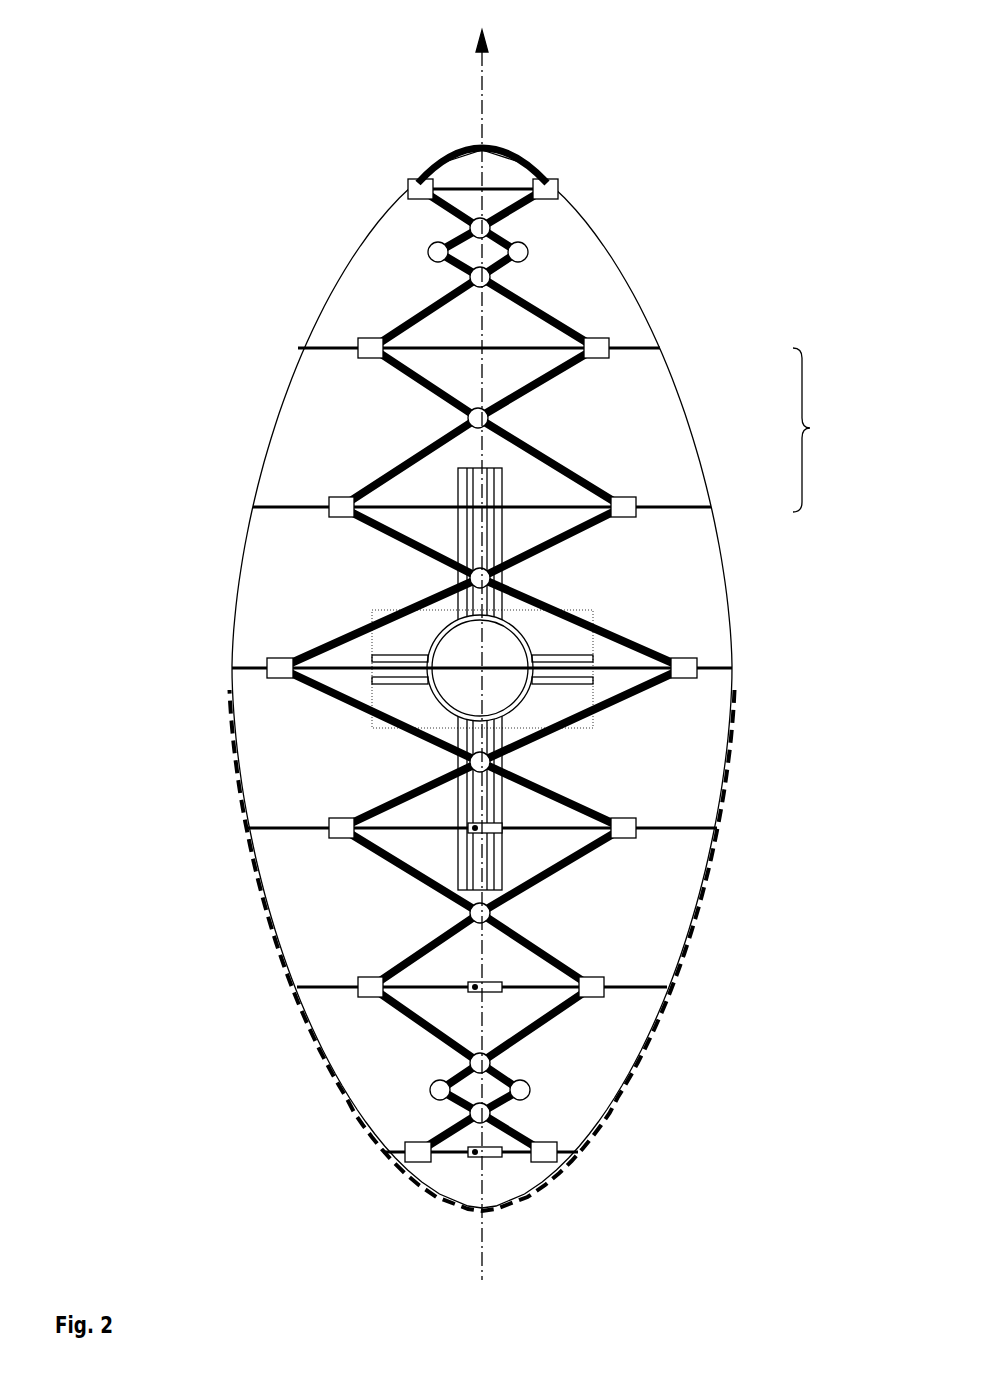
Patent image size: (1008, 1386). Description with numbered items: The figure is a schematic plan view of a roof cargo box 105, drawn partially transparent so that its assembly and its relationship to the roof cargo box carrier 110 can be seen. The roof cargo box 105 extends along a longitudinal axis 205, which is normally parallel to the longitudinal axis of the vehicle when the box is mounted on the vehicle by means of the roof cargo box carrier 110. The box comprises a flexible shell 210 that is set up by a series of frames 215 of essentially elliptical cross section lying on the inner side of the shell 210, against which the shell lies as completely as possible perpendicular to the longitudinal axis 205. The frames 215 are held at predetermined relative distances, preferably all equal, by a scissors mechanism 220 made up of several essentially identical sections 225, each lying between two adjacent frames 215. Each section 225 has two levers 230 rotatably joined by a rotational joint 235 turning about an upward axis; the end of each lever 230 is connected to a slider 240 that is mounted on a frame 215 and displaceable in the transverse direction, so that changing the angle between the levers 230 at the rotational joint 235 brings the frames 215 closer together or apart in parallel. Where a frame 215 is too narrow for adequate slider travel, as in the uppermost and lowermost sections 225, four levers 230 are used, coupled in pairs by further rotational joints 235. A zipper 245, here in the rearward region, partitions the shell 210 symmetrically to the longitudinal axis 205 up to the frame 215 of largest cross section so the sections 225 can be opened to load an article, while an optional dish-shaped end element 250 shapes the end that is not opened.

The roof cargo box 105 is at (498, 647).
The roof cargo box carrier 110 is at (625, 613).
The longitudinal axis 205 is at (482, 77).
The flexible shell 210 is at (232, 588).
The frame 215 is at (658, 347).
The scissors mechanism 220 is at (473, 670).
The section 225 is at (831, 430).
The lever 230 is at (410, 383).
The rotational joint 235 is at (465, 418).
The slider 240 is at (356, 342).
The zipper 245 is at (633, 1067).
The end element 250 is at (550, 182).